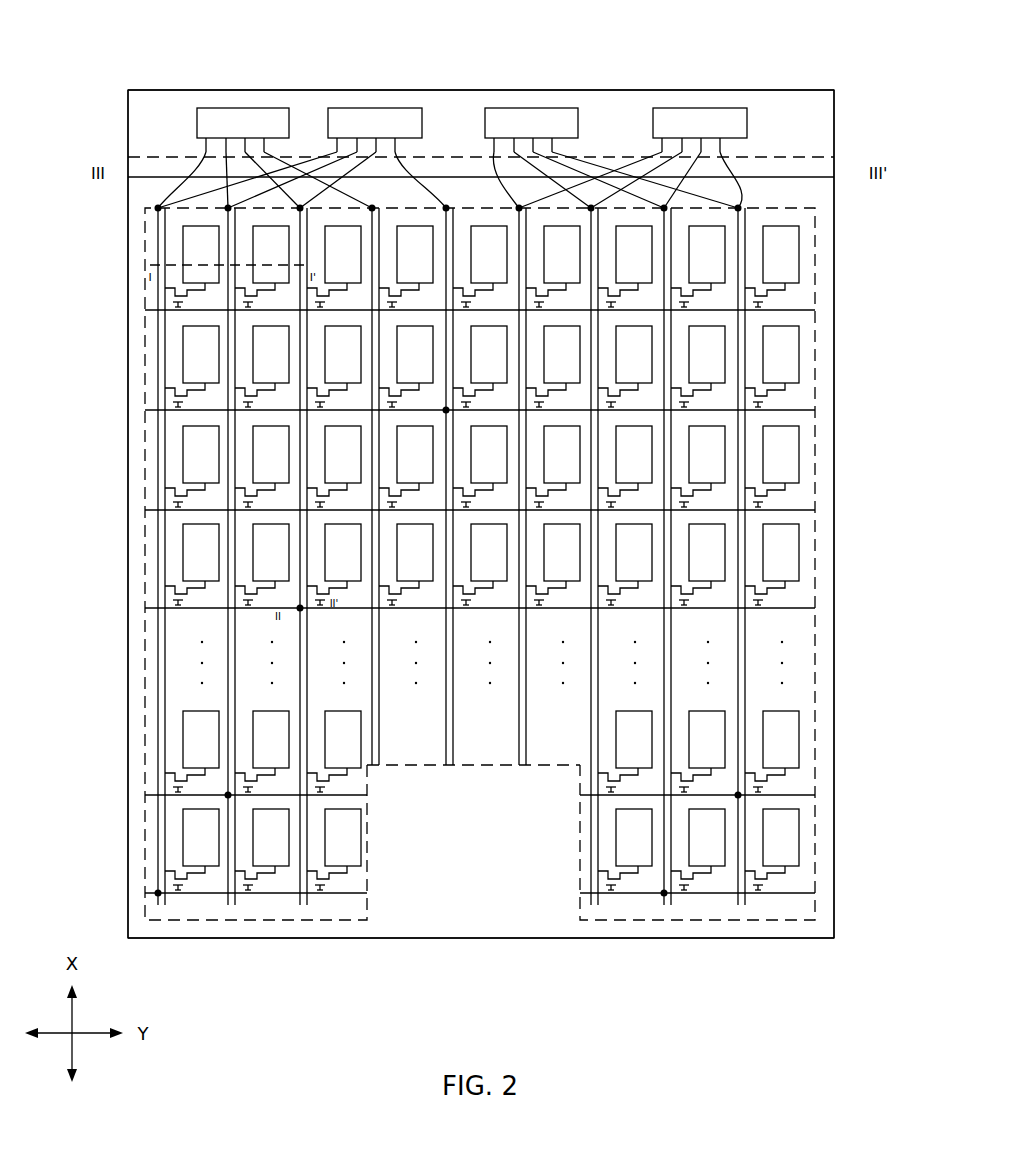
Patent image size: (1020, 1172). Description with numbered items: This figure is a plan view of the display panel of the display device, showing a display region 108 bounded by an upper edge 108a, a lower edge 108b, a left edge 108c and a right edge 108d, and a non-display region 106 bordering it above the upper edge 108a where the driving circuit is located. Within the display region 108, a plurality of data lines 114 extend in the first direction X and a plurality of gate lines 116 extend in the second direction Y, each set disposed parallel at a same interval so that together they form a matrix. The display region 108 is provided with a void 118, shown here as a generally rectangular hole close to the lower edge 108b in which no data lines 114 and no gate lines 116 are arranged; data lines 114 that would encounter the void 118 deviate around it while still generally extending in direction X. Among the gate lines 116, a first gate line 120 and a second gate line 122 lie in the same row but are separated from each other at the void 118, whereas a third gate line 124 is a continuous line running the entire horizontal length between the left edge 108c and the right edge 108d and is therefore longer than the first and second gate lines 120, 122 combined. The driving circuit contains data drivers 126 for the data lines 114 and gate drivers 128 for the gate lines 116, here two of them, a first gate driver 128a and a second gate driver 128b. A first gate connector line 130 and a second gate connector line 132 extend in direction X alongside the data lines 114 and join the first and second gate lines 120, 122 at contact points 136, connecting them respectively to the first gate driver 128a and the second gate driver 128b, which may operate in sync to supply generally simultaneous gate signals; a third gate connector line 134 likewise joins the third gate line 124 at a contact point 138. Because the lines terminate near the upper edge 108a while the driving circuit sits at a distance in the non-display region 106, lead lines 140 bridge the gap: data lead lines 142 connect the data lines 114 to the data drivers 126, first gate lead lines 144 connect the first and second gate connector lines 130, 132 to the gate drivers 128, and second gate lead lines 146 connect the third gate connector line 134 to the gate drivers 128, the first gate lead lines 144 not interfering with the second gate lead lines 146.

The non-display region 106 is at (465, 513).
The display region 108 is at (518, 488).
The upper edge 108a is at (834, 172).
The lower edge 108b is at (767, 939).
The left edge 108c is at (127, 455).
The right edge 108d is at (834, 557).
The data lines 114 is at (760, 215).
The gate lines 116 is at (800, 400).
The void 118 is at (430, 890).
The first gate line 120 is at (197, 790).
The second gate line 122 is at (787, 793).
The third gate line 124 is at (152, 607).
The data drivers 126 is at (472, 130).
The gate drivers 128 is at (453, 77).
The first gate driver 128a is at (375, 130).
The second gate driver 128b is at (531, 130).
The first gate connector line 130 is at (158, 690).
The second gate connector line 132 is at (742, 695).
The third gate connector line 134 is at (597, 352).
The contact point 136 is at (228, 794).
The contact point 138 is at (445, 410).
The lead lines 140 is at (192, 166).
The data lead lines 142 is at (200, 140).
The first gate lead lines 144 is at (270, 157).
The second gate lead lines 146 is at (343, 152).